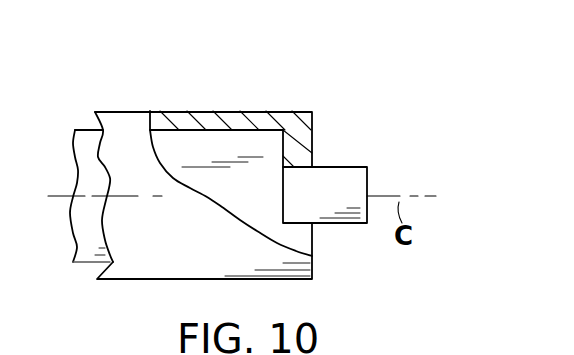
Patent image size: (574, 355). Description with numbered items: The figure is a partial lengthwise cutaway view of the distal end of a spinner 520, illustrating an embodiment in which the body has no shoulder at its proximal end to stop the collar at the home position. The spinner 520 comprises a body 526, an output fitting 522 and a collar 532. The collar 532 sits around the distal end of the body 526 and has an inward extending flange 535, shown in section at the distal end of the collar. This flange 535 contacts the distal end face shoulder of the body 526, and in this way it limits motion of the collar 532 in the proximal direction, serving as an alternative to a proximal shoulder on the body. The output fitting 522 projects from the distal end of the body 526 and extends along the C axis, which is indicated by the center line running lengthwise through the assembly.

The spinner 520 is at (268, 89).
The output fitting 522 is at (353, 178).
The body 526 is at (258, 213).
The collar 532 is at (201, 126).
The inward extending flange 535 is at (297, 131).